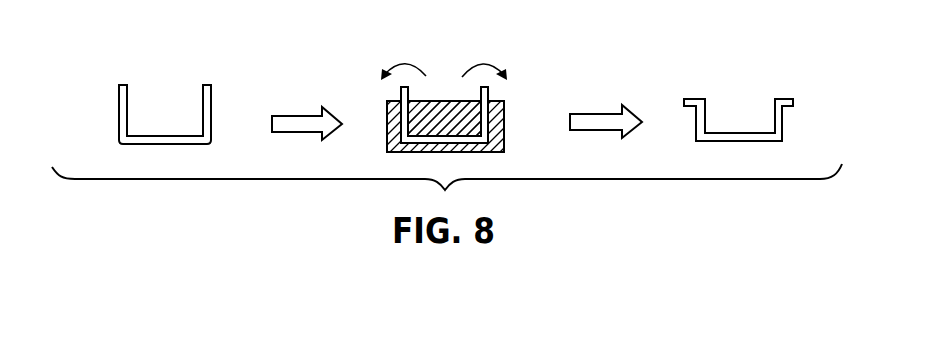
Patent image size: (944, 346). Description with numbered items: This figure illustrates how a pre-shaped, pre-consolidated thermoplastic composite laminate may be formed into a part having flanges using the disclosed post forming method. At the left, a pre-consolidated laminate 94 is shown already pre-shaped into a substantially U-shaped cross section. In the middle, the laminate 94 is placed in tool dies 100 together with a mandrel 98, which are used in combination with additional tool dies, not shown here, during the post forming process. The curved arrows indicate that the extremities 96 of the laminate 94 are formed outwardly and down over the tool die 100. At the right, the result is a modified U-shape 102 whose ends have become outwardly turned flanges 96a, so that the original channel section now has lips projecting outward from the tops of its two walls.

The pre-consolidated laminate 94 is at (94, 85).
The extremities 96 is at (400, 89).
The mandrel 98 is at (449, 115).
The tool dies 100 is at (390, 127).
The outwardly turned flanges 96a is at (693, 97).
The modified U-shape 102 is at (745, 74).